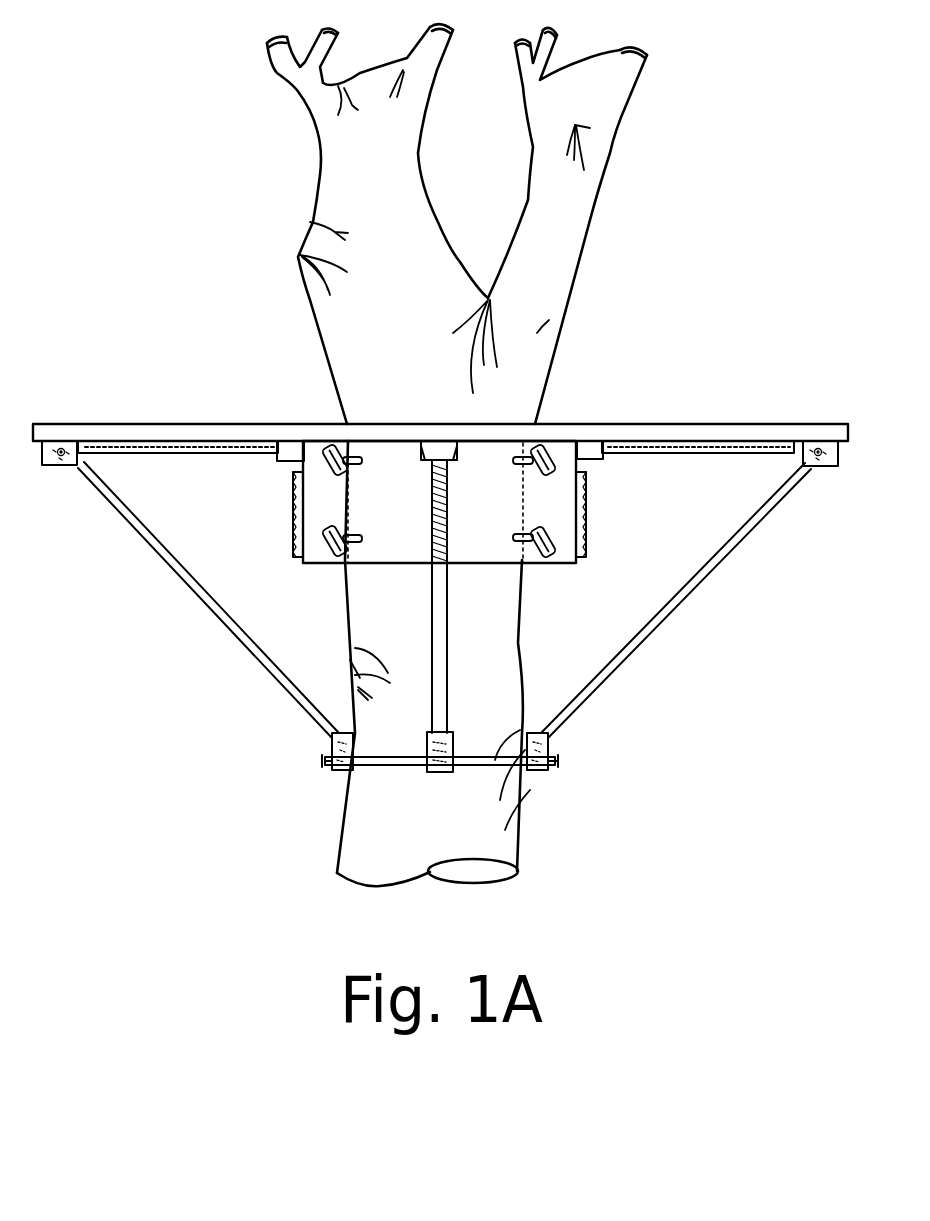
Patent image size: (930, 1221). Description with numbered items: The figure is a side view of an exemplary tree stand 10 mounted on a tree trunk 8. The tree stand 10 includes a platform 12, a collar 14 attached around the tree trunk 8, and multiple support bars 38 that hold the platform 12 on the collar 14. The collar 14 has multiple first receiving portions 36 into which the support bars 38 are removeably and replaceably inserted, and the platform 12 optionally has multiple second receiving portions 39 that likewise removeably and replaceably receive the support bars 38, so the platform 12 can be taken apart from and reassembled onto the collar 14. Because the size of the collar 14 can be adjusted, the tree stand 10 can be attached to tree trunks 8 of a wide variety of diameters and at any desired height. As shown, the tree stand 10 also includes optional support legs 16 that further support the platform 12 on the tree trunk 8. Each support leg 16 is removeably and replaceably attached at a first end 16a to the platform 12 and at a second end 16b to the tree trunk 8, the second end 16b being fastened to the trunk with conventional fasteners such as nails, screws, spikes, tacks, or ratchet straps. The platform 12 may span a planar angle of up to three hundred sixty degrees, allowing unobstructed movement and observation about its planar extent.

The tree trunk 8 is at (520, 845).
The tree stand 10 is at (133, 373).
The platform 12 is at (605, 424).
The collar 14 is at (535, 565).
The support leg 16 is at (195, 607).
The first end 16a is at (812, 480).
The second end 16b is at (557, 744).
The first receiving portion 36 is at (293, 540).
The support bar 38 is at (282, 462).
The second receiving portion 39 is at (200, 452).